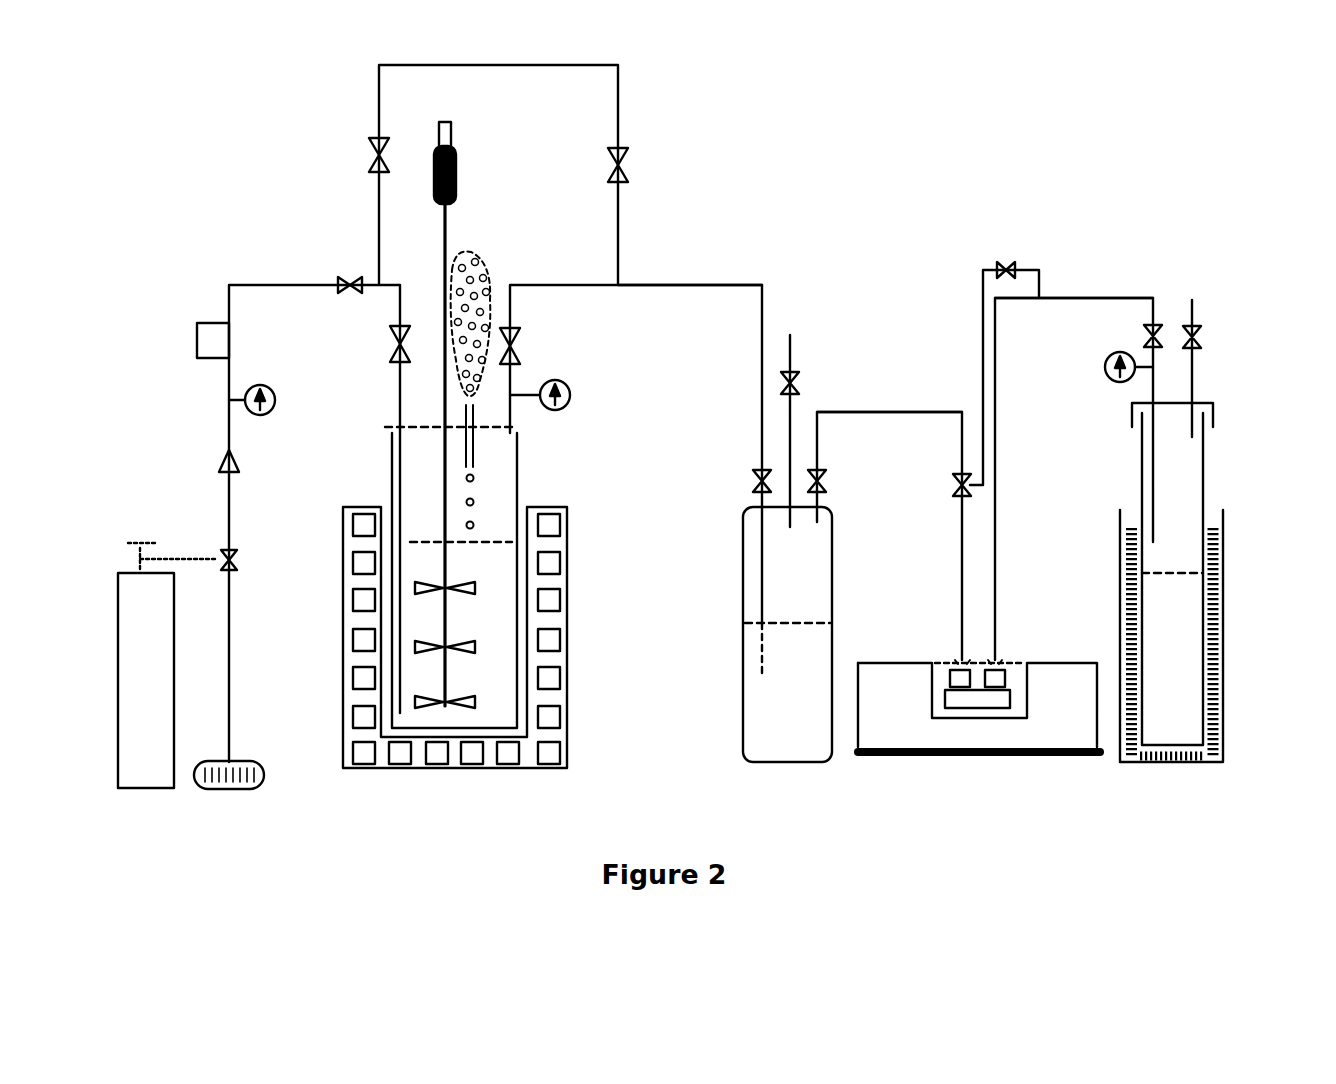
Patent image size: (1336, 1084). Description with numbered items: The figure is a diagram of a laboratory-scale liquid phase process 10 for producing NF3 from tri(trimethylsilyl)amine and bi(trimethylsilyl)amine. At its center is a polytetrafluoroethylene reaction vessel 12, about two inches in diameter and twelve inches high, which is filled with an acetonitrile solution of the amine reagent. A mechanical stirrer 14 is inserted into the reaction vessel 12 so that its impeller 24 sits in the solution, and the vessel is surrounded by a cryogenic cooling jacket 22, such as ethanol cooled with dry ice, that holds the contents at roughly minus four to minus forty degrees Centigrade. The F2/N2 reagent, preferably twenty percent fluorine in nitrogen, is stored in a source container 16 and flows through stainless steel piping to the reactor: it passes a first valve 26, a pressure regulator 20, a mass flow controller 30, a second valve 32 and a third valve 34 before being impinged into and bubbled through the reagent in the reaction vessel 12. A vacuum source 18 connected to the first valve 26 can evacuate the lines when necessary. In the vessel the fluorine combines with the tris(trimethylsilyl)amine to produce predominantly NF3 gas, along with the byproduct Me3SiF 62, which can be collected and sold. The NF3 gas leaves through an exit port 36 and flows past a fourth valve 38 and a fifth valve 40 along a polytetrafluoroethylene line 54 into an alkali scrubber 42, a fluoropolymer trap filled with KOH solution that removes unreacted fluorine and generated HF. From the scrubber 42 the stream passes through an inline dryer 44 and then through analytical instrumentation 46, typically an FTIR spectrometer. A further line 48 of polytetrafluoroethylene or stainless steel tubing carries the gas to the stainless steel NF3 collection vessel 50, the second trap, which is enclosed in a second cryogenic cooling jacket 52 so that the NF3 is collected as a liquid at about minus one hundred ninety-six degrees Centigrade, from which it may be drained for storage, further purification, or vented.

The liquid phase process 10 is at (985, 832).
The reaction vessel 12 is at (527, 460).
The mechanical stirrer 14 is at (456, 178).
The source container 16 is at (135, 623).
The vacuum source 18 is at (225, 785).
The pressure regulator 20 is at (228, 457).
The cryogenic cooling jacket 22 is at (543, 608).
The impeller 24 is at (425, 575).
The first valve 26 is at (213, 546).
The mass flow controller 30 is at (197, 331).
The second valve 32 is at (348, 270).
The third valve 34 is at (382, 340).
The exit port 36 is at (512, 426).
The fourth valve 38 is at (523, 326).
The fifth valve 40 is at (748, 482).
The alkali scrubber 42 is at (748, 745).
The inline dryer 44 is at (870, 412).
The analytical instrumentation 46 is at (900, 683).
The line 48 is at (1105, 298).
The NF3 collection vessel 50 is at (1170, 647).
The second cryogenic cooling jacket 52 is at (1222, 730).
The line 54 is at (710, 283).
The Me3SiF byproduct 62 is at (488, 268).